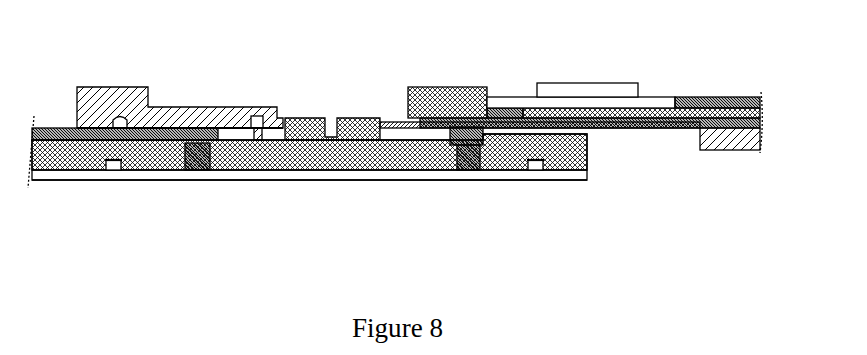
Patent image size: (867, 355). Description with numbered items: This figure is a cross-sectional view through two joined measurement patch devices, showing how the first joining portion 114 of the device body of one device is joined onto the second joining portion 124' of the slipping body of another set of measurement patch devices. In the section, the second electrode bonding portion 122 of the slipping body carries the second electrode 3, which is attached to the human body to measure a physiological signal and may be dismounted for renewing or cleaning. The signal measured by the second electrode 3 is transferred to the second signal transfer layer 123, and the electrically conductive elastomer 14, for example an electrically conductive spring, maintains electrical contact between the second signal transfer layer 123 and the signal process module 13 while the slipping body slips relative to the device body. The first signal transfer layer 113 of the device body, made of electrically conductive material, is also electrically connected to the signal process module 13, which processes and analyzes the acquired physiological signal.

The second electrode 3 is at (477, 181).
The signal process module 13 is at (578, 88).
The electrically conductive elastomer 14 is at (510, 108).
The first signal transfer layer 113 is at (759, 122).
The first joining portion 114 is at (277, 117).
The second electrode bonding portion 122 is at (588, 163).
The second signal transfer layer 123 is at (757, 96).
The second joining portion 124' is at (332, 99).